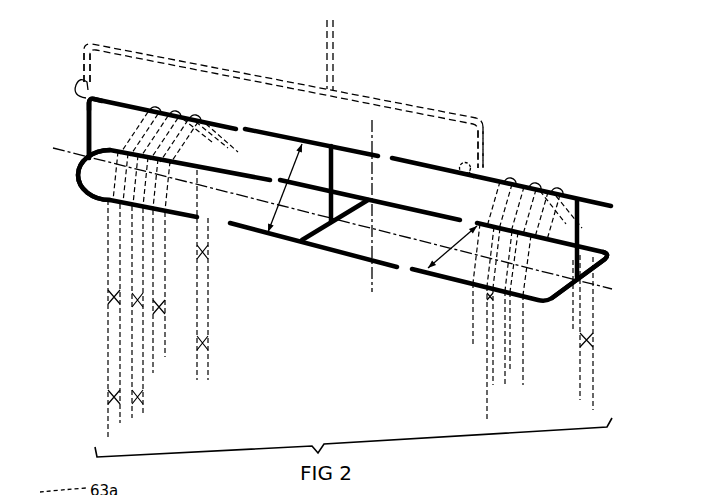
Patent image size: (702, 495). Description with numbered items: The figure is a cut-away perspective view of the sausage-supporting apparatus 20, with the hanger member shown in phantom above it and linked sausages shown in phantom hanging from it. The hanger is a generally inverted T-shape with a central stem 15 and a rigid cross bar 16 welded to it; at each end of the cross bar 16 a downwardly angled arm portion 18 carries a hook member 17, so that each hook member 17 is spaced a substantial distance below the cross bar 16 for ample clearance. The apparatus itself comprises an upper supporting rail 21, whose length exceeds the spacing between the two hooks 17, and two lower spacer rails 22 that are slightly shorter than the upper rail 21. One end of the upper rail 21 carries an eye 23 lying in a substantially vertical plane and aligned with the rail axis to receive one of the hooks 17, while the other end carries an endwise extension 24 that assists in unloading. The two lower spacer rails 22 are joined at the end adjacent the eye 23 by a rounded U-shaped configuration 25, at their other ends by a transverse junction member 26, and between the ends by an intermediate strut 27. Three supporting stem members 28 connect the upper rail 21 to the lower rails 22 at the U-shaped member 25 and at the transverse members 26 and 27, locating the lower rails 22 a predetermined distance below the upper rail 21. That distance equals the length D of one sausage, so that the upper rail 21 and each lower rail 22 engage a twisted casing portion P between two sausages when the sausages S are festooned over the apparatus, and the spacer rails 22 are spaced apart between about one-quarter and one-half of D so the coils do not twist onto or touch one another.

The central stem 15 is at (334, 64).
The rigid cross bar 16 is at (456, 107).
The hook member 17 is at (74, 82).
The downwardly angled arm portion 18 is at (86, 50).
The sausage-supporting apparatus 20 is at (72, 183).
The upper supporting rail 21 is at (280, 133).
The lower spacer rails 22 is at (398, 201).
The eye 23 is at (82, 97).
The endwise extension 24 is at (598, 203).
The rounded U-shaped configuration 25 is at (77, 169).
The transverse junction member 26 is at (562, 290).
The intermediate junction member or strut 27 is at (322, 228).
The supporting stem members 28 is at (86, 124).
The twisted casing portion P is at (156, 100).
The strips S is at (132, 138).
The length of a sausage D is at (295, 158).